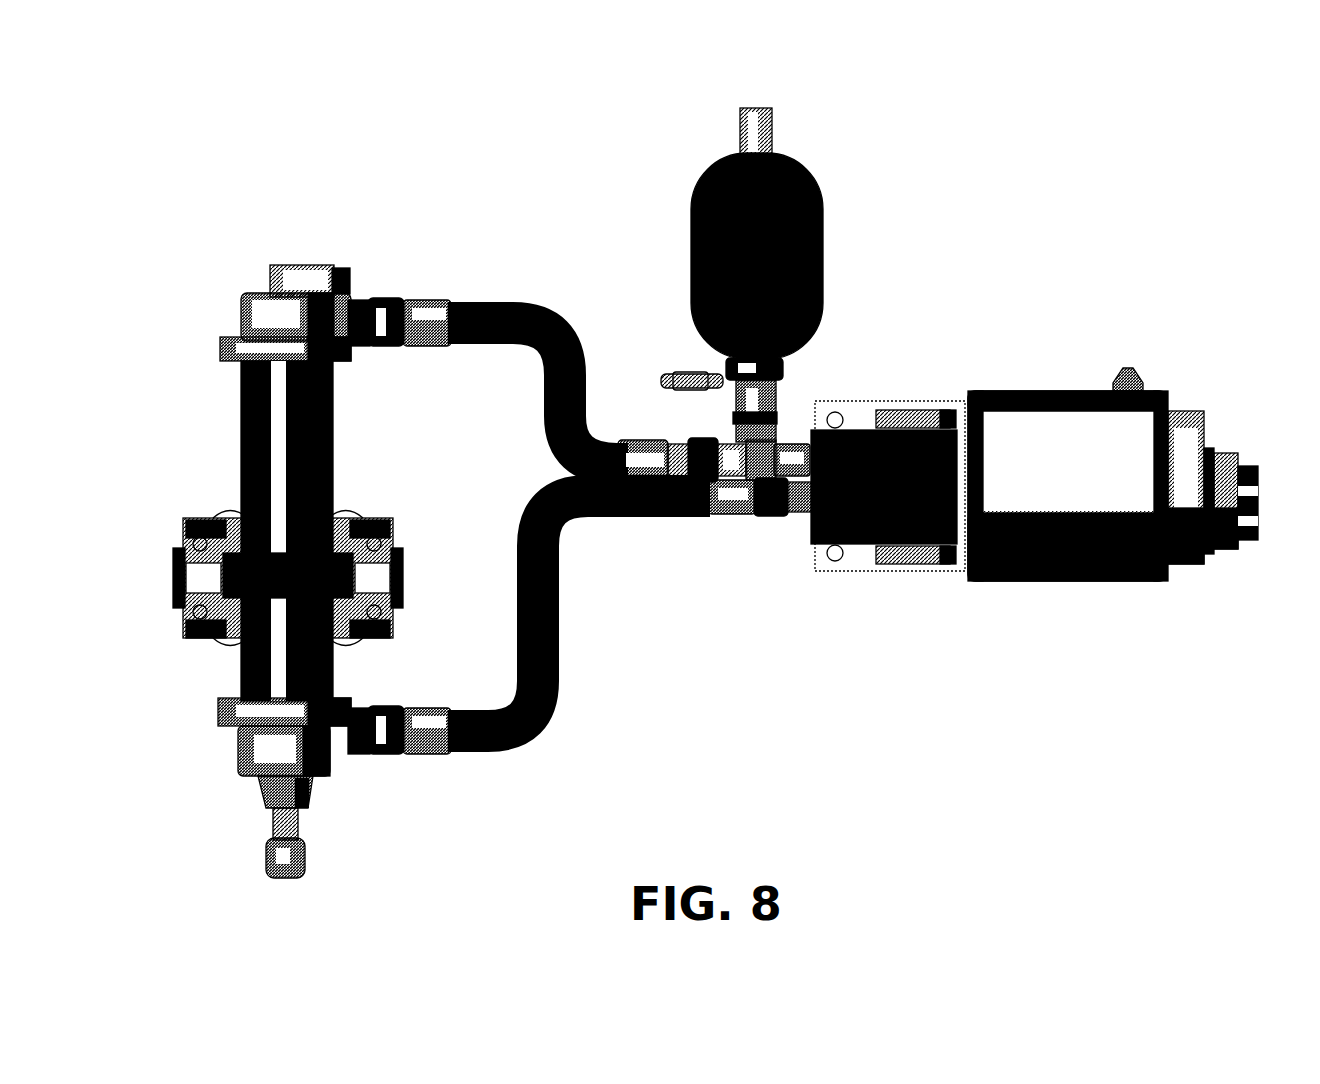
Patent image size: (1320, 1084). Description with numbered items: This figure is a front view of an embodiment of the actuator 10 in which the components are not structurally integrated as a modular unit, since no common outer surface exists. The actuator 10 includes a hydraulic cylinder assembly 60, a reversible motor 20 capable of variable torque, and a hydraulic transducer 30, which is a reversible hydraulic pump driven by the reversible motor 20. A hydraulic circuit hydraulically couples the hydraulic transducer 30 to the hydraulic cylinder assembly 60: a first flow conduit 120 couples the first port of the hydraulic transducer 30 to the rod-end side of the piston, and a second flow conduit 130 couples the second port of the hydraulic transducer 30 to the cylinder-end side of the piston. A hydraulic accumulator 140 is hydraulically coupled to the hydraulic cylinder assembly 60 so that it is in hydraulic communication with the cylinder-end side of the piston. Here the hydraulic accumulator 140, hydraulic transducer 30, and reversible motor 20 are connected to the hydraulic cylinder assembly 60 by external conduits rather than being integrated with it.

The actuator 10 is at (1018, 176).
The reversible motor 20 is at (1140, 572).
The hydraulic transducer 30 is at (862, 535).
The hydraulic cylinder assembly 60 is at (334, 195).
The first flow conduit 120 is at (548, 567).
The second flow conduit 130 is at (535, 300).
The hydraulic accumulator 140 is at (790, 153).